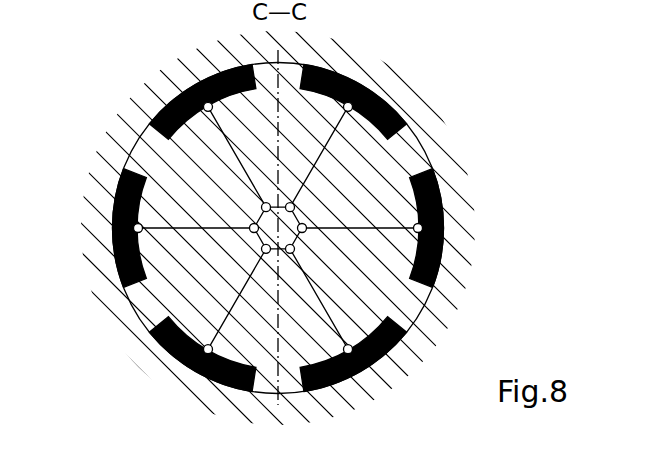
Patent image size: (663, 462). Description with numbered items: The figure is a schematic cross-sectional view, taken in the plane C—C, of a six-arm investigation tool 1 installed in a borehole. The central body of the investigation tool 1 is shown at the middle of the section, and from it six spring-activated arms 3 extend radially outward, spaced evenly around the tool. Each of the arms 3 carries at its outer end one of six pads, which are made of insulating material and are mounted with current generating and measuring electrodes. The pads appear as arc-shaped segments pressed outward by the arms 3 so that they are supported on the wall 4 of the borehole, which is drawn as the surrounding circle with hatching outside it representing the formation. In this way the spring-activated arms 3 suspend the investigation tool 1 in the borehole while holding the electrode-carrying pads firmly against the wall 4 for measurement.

The investigation tool 1 is at (287, 220).
The spring-activated arms 3 is at (262, 160).
The wall 4 is at (415, 130).